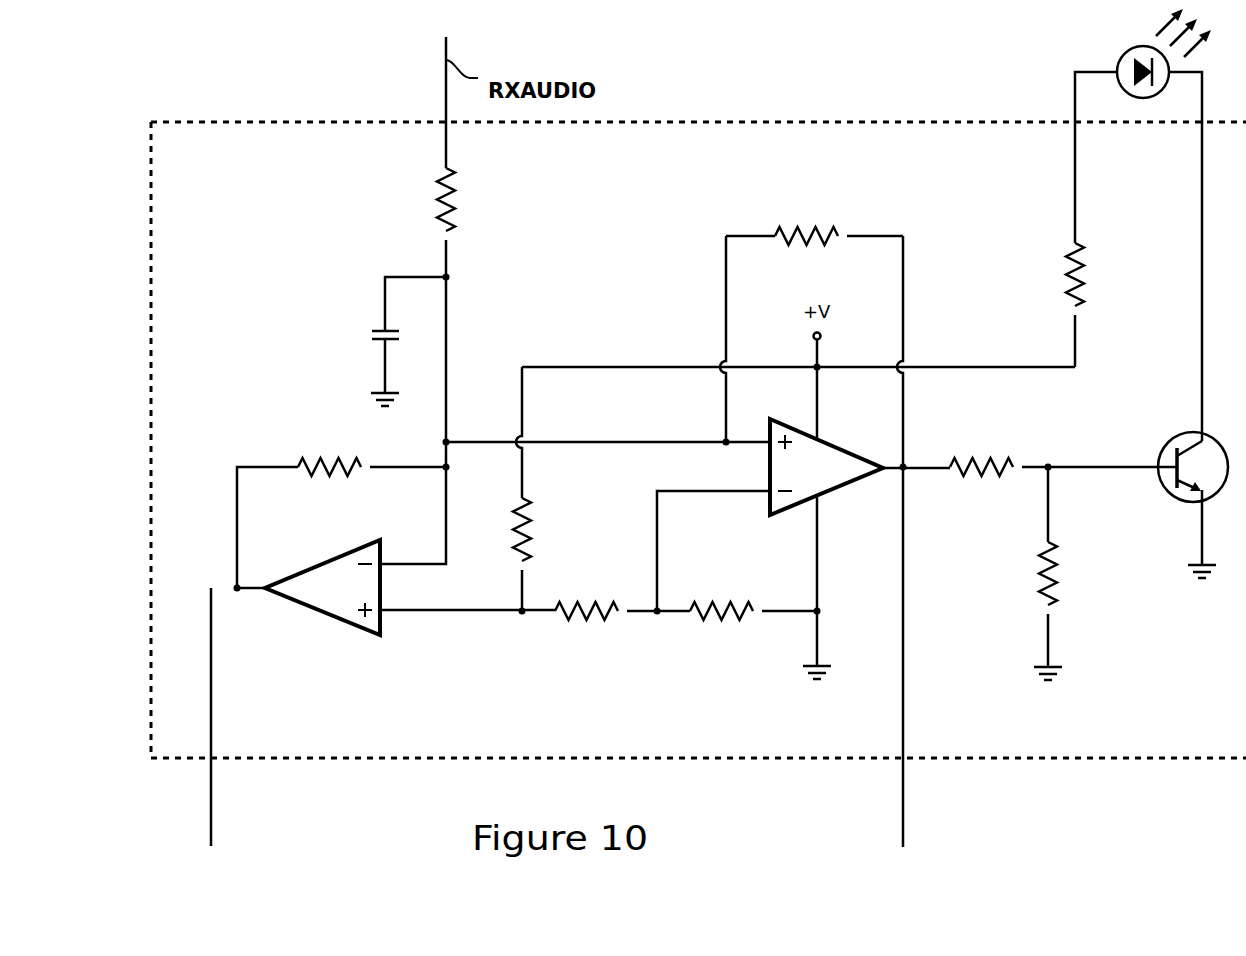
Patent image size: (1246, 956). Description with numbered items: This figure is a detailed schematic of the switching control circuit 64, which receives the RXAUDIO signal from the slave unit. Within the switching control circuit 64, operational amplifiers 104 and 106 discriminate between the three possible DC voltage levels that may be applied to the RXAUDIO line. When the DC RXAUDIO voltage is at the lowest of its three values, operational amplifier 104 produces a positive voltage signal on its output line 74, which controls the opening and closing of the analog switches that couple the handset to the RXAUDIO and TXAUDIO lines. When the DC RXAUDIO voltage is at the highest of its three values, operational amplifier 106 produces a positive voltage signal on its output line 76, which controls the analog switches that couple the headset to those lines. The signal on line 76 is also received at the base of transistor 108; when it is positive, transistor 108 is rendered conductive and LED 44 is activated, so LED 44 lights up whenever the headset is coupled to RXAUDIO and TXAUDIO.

The LED 44 is at (1122, 56).
The switching control circuit 64 is at (407, 760).
The output line 74 is at (211, 815).
The output line 76 is at (903, 808).
The operational amplifier 104 is at (364, 634).
The operational amplifier 106 is at (850, 484).
The transistor 108 is at (1180, 503).